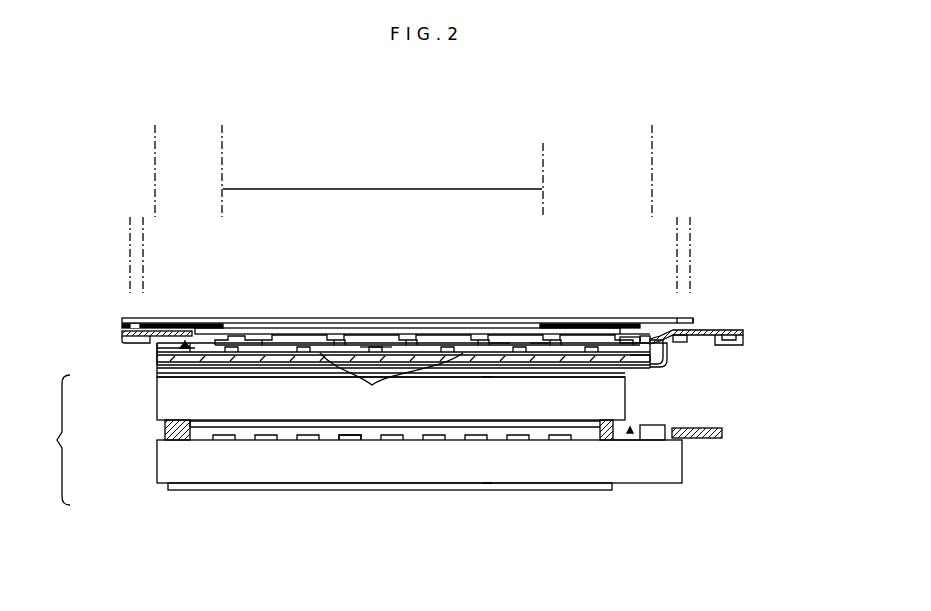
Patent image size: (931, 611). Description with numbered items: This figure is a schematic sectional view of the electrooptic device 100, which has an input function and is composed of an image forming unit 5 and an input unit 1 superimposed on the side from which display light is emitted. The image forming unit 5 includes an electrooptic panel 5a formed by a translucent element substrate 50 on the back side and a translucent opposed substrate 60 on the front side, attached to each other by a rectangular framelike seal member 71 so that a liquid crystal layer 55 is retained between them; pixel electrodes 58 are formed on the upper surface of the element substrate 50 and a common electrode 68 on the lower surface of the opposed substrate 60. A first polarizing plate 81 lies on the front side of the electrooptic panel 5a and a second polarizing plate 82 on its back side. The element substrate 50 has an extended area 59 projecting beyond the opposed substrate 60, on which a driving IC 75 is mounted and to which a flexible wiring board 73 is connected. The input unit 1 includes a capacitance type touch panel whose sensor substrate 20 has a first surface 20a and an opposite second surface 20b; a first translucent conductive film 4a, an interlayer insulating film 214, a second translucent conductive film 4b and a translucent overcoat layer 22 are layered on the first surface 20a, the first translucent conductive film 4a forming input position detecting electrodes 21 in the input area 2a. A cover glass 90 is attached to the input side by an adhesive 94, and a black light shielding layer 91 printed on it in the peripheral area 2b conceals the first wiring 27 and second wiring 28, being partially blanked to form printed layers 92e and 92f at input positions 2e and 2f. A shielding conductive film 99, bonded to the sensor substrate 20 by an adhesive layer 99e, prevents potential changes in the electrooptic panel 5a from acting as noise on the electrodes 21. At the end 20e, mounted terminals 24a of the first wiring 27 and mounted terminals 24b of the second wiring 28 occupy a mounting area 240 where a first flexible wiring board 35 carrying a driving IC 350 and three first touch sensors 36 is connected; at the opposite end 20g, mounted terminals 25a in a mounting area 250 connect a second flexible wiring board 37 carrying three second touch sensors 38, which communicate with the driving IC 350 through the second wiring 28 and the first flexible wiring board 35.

The input unit 1 is at (762, 268).
The electrooptic device 100 is at (85, 188).
The input area 2a is at (542, 189).
The peripheral area 2b is at (221, 160).
The input position 2f is at (195, 225).
The input position 2e is at (625, 226).
The first translucent conductive film 4a is at (318, 347).
The second translucent conductive film 4b is at (392, 342).
The interlayer insulating film 214 is at (367, 345).
The translucent overcoat layer 22 is at (420, 337).
The sensor substrate 20 is at (548, 358).
The first surface 20a is at (500, 343).
The second surface 20b is at (540, 343).
The end of sensor substrate 20g is at (160, 345).
The end of sensor substrate 20e is at (665, 360).
The cover glass 90 is at (233, 320).
The light shielding layer 91 is at (185, 323).
The printed layer 92f is at (135, 325).
The printed layer 92e is at (685, 325).
The adhesive 94 is at (258, 331).
The second touch sensors 38 is at (122, 333).
The second flexible wiring board 37 is at (128, 343).
The first touch sensors 36 is at (690, 335).
The first flexible wiring board 35 is at (715, 331).
The driving IC 350 is at (730, 340).
The first wiring 27 is at (617, 337).
The mounted terminals 24a is at (644, 336).
The mounted terminals 24b is at (639, 288).
The second wiring 28 is at (188, 342).
The input position detecting electrodes 21 is at (391, 382).
The shielding conductive film 99 is at (578, 368).
The adhesive layer 99e is at (462, 352).
The mounting area 240 is at (595, 365).
The first polarizing plate 81 is at (157, 375).
The opposed substrate 60 is at (157, 402).
The image forming unit 5 is at (56, 440).
The element substrate 50 is at (157, 455).
The second polarizing plate 82 is at (168, 486).
The mounted terminals 25a is at (177, 345).
The mounting area 250 is at (193, 346).
The pixel electrodes 58 is at (268, 440).
The common electrode 68 is at (308, 422).
The liquid crystal layer 55 is at (350, 430).
The electrooptic panel 5a is at (487, 377).
The seal member 71 is at (630, 432).
The extended area 59 is at (652, 424).
The driving IC 75 is at (660, 428).
The flexible wiring board 73 is at (690, 432).